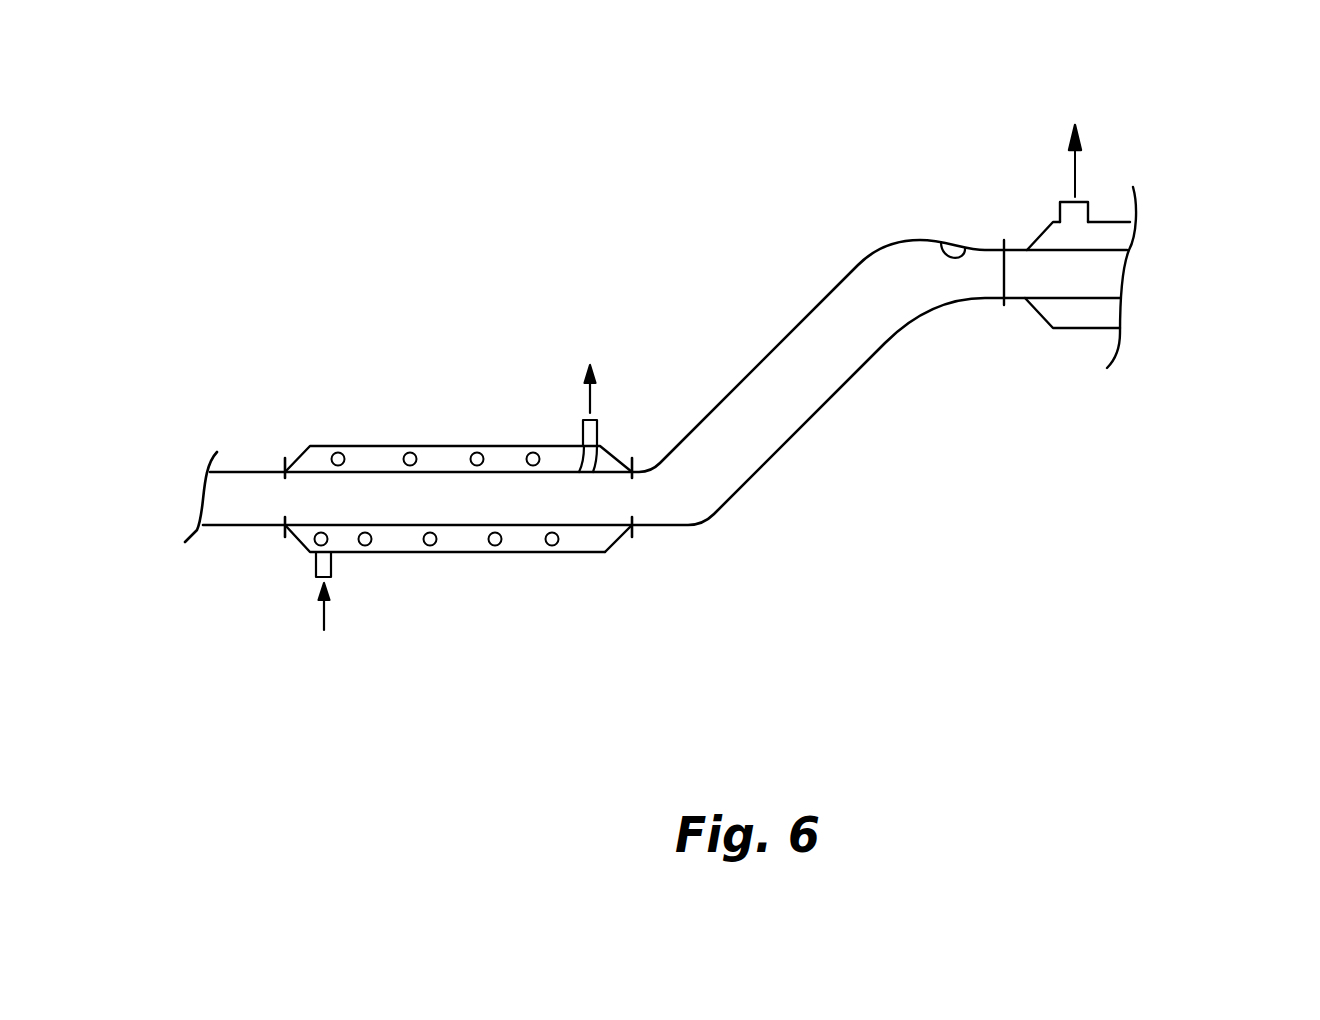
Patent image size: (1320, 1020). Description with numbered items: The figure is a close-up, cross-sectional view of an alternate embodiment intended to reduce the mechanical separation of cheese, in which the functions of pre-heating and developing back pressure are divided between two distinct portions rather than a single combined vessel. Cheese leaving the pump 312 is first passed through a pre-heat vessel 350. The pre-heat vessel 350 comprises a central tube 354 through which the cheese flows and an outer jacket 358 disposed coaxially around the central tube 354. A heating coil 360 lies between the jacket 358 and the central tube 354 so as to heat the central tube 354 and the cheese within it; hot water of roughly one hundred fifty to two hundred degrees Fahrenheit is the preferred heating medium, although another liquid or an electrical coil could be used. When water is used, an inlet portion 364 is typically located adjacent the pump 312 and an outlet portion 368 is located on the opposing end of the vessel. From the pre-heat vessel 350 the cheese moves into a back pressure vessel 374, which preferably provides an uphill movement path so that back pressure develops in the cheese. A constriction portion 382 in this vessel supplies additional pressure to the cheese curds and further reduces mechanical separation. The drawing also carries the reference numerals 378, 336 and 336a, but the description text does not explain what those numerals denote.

The pump 312 is at (250, 470).
The pre-heat vessel 350 is at (443, 447).
The central tube 354 is at (617, 545).
The outer jacket 358 is at (417, 553).
The heating coil 360 is at (343, 457).
The inlet portion 364 is at (315, 565).
The outlet portion 368 is at (598, 432).
The back pressure vessel 374 is at (783, 340).
The lower wall of riser section 378 is at (797, 430).
The constriction portion 382 is at (963, 247).
The fitting 336 is at (1130, 272).
The fitting outlet 336a is at (1115, 222).